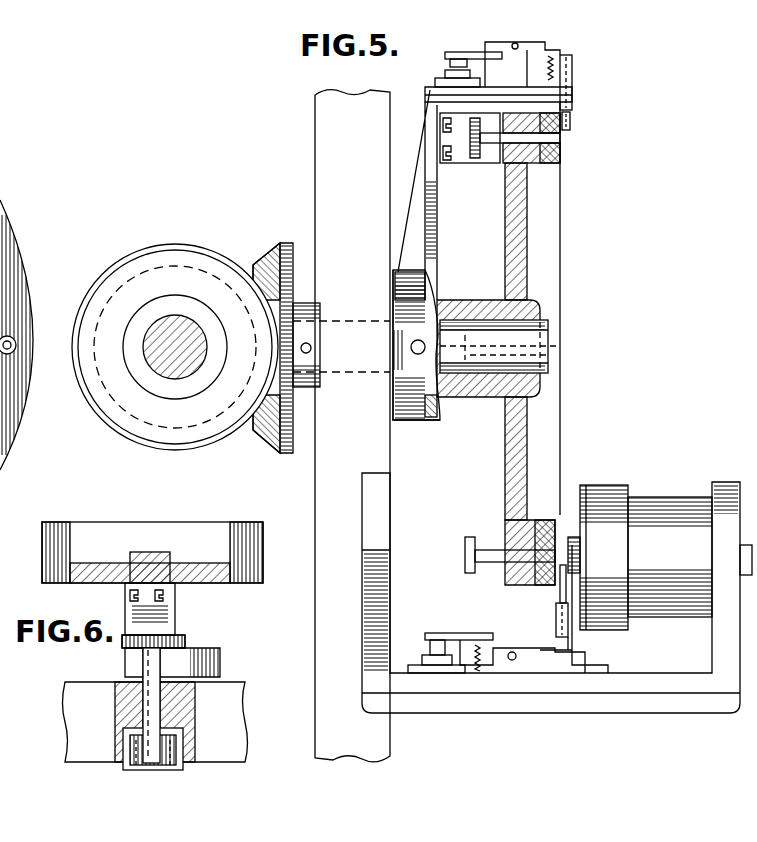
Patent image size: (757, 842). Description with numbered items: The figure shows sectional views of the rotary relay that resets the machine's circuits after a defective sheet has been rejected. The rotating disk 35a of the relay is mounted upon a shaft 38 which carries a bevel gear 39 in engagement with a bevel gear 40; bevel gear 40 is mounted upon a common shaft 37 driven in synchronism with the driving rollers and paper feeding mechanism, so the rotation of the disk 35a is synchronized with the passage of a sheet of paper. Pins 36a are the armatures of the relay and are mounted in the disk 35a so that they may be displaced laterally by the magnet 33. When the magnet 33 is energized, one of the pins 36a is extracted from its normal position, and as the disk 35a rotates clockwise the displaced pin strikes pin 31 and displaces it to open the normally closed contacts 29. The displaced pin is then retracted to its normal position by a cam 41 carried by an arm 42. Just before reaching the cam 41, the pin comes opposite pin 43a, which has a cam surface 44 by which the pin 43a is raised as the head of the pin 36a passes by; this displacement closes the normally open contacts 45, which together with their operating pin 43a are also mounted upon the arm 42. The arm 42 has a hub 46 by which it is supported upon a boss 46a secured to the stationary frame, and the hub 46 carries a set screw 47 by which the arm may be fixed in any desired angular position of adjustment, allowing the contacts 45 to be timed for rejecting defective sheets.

In FIG. 5, the normally closed contacts 29 is at (430, 640).
In FIG. 5, the pin 31 is at (563, 590).
In FIG. 5, the magnet 33 is at (668, 505).
In FIG. 5, the rotating disk 35a is at (0, 462).
In FIG. 6, the rotating disk 35a is at (80, 710).
In FIG. 5, the pins 36a is at (535, 170).
In FIG. 6, the pins 36a is at (150, 700).
In FIG. 5, the common shaft 37 is at (180, 370).
In FIG. 5, the shaft 38 is at (458, 360).
In FIG. 5, the bevel gear 39 is at (270, 265).
In FIG. 5, the bevel gear 40 is at (185, 252).
In FIG. 5, the cam 41 is at (490, 150).
In FIG. 6, the cam 41 is at (190, 650).
In FIG. 5, the arm 42 is at (430, 240).
In FIG. 6, the arm 42 is at (97, 573).
In FIG. 5, the pin 43a is at (572, 68).
In FIG. 5, the cam surface 44 is at (568, 130).
In FIG. 5, the normally open contacts 45 is at (445, 64).
In FIG. 5, the hub 46 is at (428, 420).
In FIG. 5, the boss 46a is at (395, 420).
In FIG. 5, the set screw 47 is at (415, 354).